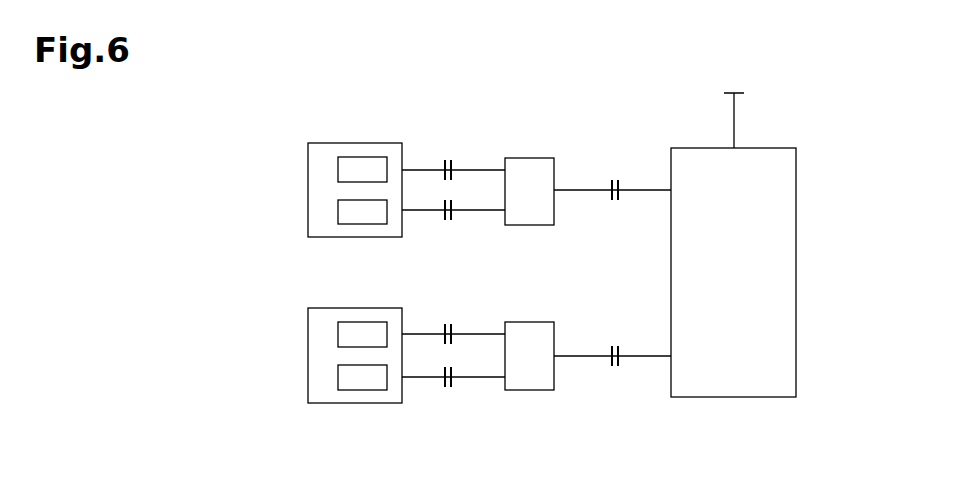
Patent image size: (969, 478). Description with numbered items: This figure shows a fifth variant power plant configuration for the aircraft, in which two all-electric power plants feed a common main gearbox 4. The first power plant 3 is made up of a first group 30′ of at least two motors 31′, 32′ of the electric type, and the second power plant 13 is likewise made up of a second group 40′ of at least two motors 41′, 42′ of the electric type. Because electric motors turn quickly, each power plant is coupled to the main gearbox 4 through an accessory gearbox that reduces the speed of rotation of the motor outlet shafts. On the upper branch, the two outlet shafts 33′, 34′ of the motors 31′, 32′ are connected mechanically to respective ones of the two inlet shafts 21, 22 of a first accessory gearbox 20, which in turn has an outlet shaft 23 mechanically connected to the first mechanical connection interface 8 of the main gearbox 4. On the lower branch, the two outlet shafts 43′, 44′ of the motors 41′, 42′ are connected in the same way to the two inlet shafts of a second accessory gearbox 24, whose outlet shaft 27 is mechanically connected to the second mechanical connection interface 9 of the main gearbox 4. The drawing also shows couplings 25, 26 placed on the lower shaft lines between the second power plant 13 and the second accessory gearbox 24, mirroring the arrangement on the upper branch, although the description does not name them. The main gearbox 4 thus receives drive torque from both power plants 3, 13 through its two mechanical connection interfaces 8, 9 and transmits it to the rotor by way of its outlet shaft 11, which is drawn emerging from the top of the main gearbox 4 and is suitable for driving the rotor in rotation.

The first power plant 3 is at (328, 143).
The motor 31′ is at (372, 157).
The motor 32′ is at (338, 205).
The first group 30′ is at (318, 189).
The outlet shaft 33′ is at (432, 170).
The outlet shaft 34′ is at (410, 212).
The inlet shaft 21 is at (490, 168).
The inlet shaft 22 is at (492, 212).
The first accessory gearbox 20 is at (540, 158).
The outlet shaft 23 is at (596, 190).
The first mechanical connection interface 8 is at (646, 190).
The second power plant 13 is at (318, 356).
The motor 41′ is at (355, 322).
The motor 42′ is at (348, 390).
The second group 40′ is at (318, 356).
The outlet shaft 43′ is at (436, 334).
The outlet shaft 44′ is at (410, 380).
The third coupling 25 is at (480, 334).
The fourth coupling 26 is at (470, 380).
The second accessory gearbox 24 is at (556, 374).
The outlet shaft 27 is at (600, 356).
The second mechanical connection interface 9 is at (650, 356).
The main gearbox 4 is at (796, 205).
The outlet shaft 11 is at (734, 128).